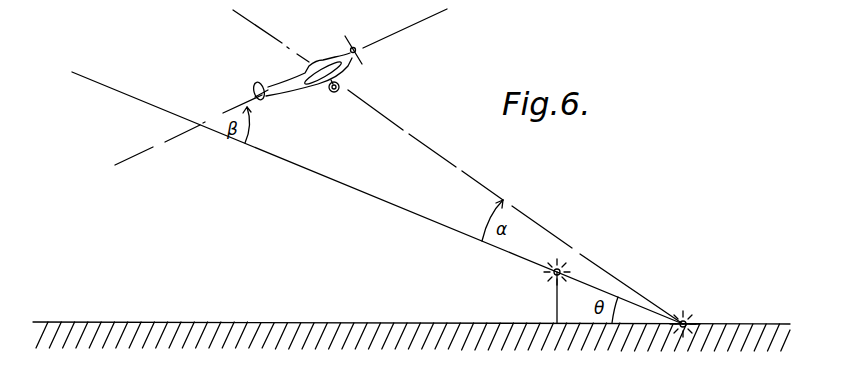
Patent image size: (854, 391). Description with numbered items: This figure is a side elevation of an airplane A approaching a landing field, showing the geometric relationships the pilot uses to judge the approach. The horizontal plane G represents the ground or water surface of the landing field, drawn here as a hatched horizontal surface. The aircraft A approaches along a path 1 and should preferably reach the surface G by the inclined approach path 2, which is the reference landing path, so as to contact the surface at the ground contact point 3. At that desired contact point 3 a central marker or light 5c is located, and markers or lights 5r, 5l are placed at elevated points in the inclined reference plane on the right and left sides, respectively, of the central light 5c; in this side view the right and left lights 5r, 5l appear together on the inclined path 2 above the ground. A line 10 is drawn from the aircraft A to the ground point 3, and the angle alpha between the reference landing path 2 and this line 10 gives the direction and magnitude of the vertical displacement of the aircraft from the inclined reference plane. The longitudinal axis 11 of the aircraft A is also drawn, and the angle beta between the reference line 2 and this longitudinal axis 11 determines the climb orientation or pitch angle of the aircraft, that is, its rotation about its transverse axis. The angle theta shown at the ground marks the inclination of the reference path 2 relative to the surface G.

The approach path 1 is at (377, 198).
The inclined approach path 2 is at (276, 157).
The ground contact point 3 is at (690, 323).
The right marker or light 5r is at (529, 291).
The left marker or light 5l is at (551, 275).
The central marker or light 5c is at (688, 315).
The line from aircraft to ground point 10 is at (258, 27).
The longitudinal axis of the aircraft 11 is at (281, 87).
The aircraft A is at (338, 53).
The horizontal plane of landing field surface G is at (402, 322).